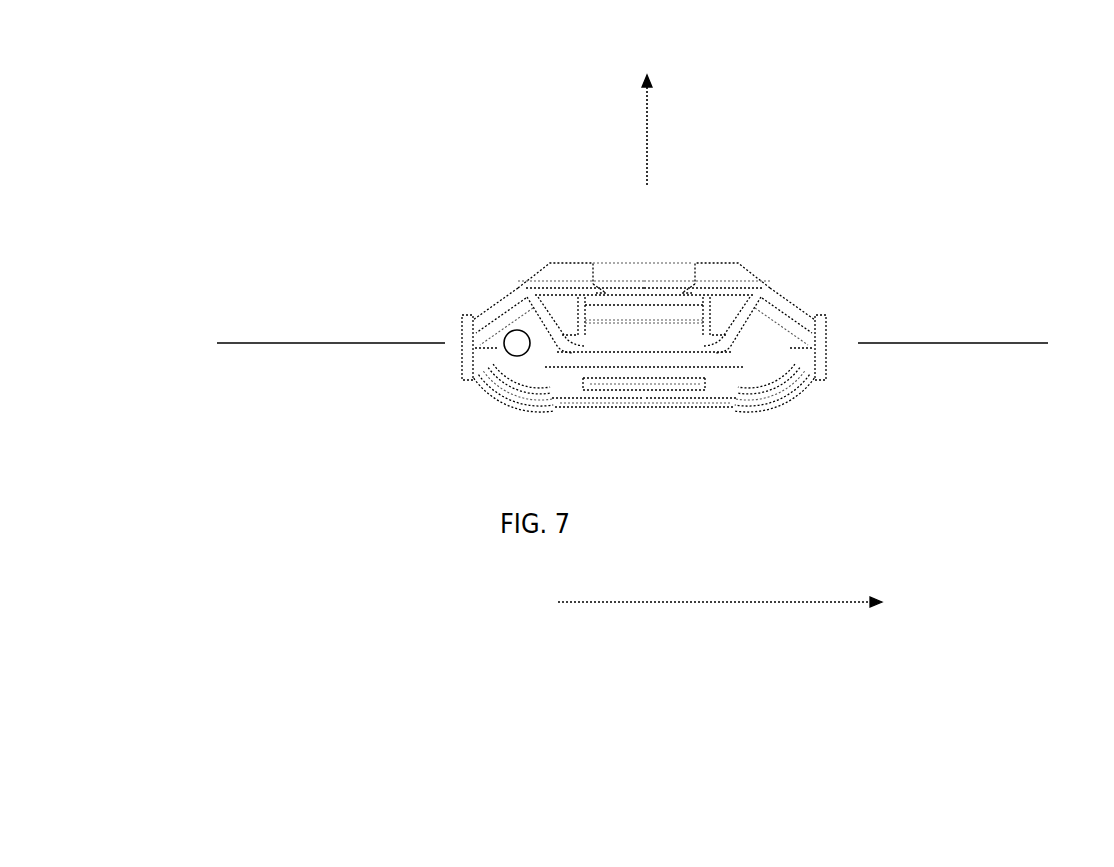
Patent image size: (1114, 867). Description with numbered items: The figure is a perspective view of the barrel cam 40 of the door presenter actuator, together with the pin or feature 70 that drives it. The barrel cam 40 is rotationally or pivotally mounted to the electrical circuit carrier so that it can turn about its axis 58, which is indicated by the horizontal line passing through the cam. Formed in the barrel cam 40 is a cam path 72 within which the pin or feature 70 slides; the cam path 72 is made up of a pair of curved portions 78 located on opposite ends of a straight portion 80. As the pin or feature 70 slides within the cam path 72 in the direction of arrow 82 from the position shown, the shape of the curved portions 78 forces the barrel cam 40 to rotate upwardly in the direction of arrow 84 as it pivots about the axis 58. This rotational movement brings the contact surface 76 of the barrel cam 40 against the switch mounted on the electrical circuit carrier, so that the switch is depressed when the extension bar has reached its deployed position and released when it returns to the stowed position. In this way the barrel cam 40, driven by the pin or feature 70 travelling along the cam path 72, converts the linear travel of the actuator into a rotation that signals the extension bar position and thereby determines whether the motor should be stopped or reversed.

The barrel cam 40 is at (820, 268).
The axis 58 is at (282, 343).
The pin or feature 70 is at (504, 338).
The cam path 72 is at (588, 403).
The contact surface 76 is at (642, 283).
The curved portions 78 is at (503, 362).
The straight portion 80 is at (683, 392).
The arrow 82 is at (645, 602).
The arrow 84 is at (647, 117).